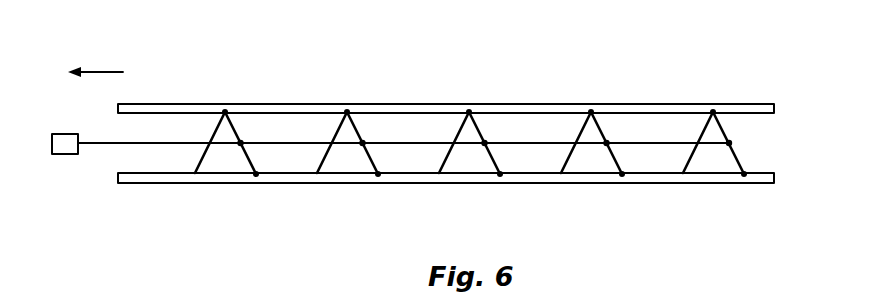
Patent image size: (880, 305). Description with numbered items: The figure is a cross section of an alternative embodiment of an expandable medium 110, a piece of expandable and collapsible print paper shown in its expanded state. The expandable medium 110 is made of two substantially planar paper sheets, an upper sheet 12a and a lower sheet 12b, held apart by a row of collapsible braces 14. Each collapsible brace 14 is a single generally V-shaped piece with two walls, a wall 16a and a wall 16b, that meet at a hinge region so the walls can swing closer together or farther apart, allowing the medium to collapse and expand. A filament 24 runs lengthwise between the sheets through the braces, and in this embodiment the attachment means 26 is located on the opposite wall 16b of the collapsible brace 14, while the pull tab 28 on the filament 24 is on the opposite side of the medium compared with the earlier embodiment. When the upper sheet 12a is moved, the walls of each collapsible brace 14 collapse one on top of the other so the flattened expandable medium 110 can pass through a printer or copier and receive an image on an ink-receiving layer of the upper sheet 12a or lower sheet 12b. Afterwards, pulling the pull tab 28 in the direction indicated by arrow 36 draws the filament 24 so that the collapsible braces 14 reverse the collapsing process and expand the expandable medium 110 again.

The expandable medium 110 is at (222, 78).
The upper sheet 12a is at (120, 108).
The lower sheet 12b is at (118, 179).
The collapsible brace 14 is at (207, 154).
The wall 16a is at (327, 155).
The wall 16b is at (372, 160).
The filament 24 is at (117, 146).
The attachment means 26 is at (244, 141).
The pull tab 28 is at (59, 144).
The arrow 36 is at (97, 72).